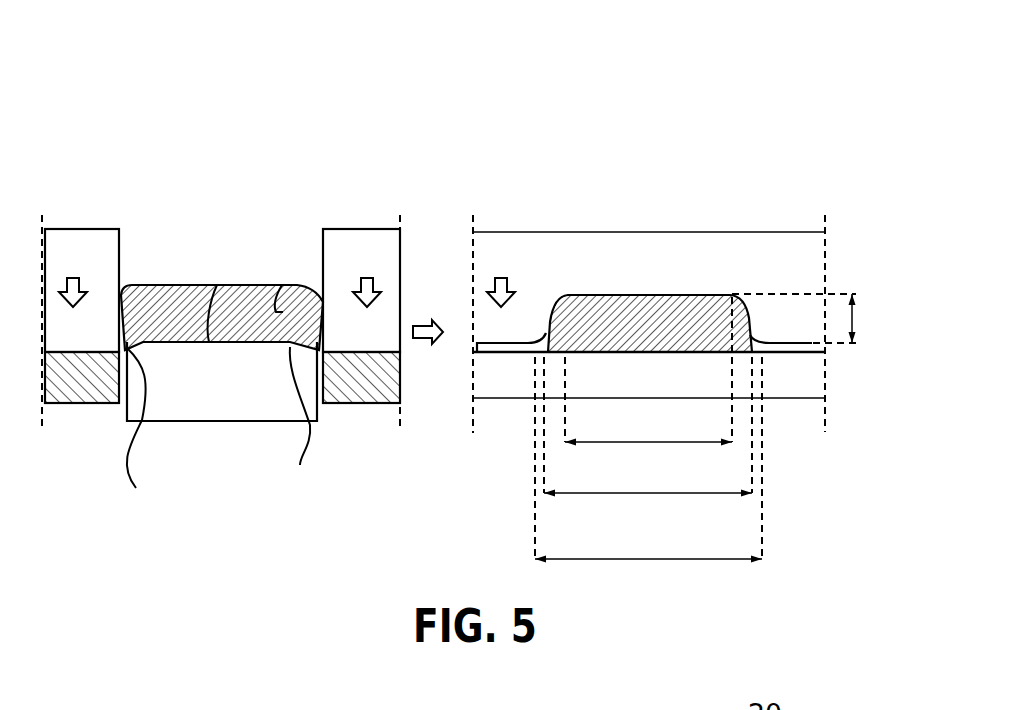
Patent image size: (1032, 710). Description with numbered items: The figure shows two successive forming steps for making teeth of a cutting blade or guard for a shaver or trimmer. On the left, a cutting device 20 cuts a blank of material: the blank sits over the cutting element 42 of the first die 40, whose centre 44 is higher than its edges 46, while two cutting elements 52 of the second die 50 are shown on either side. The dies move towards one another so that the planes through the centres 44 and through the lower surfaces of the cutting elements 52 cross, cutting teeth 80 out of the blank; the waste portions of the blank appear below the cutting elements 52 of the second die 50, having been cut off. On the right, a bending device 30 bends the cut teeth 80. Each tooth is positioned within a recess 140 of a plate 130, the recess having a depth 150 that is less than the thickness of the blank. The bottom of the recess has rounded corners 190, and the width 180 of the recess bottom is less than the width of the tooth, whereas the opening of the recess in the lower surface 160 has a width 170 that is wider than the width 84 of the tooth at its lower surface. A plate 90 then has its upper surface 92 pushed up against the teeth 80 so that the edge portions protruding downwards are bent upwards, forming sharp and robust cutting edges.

The cutting device 20 is at (215, 108).
The bending device 30 is at (658, 108).
The first die 40 is at (222, 438).
The cutting element 42 is at (233, 400).
The centre 44 is at (217, 286).
The edges 46 is at (218, 430).
The second die 50 is at (232, 255).
The cutting elements 52 is at (352, 228).
The teeth 80 is at (282, 286).
The width of cutting tooth 84 is at (648, 442).
The plate 90 is at (507, 382).
The upper surface 92 is at (475, 345).
The plate 130 is at (508, 250).
The recesses 140 is at (674, 293).
The depth 150 is at (819, 318).
The lower surface 160 is at (812, 345).
The width of opening 170 is at (648, 475).
The width of recess bottom 180 is at (648, 386).
The rounded corners 190 is at (548, 300).